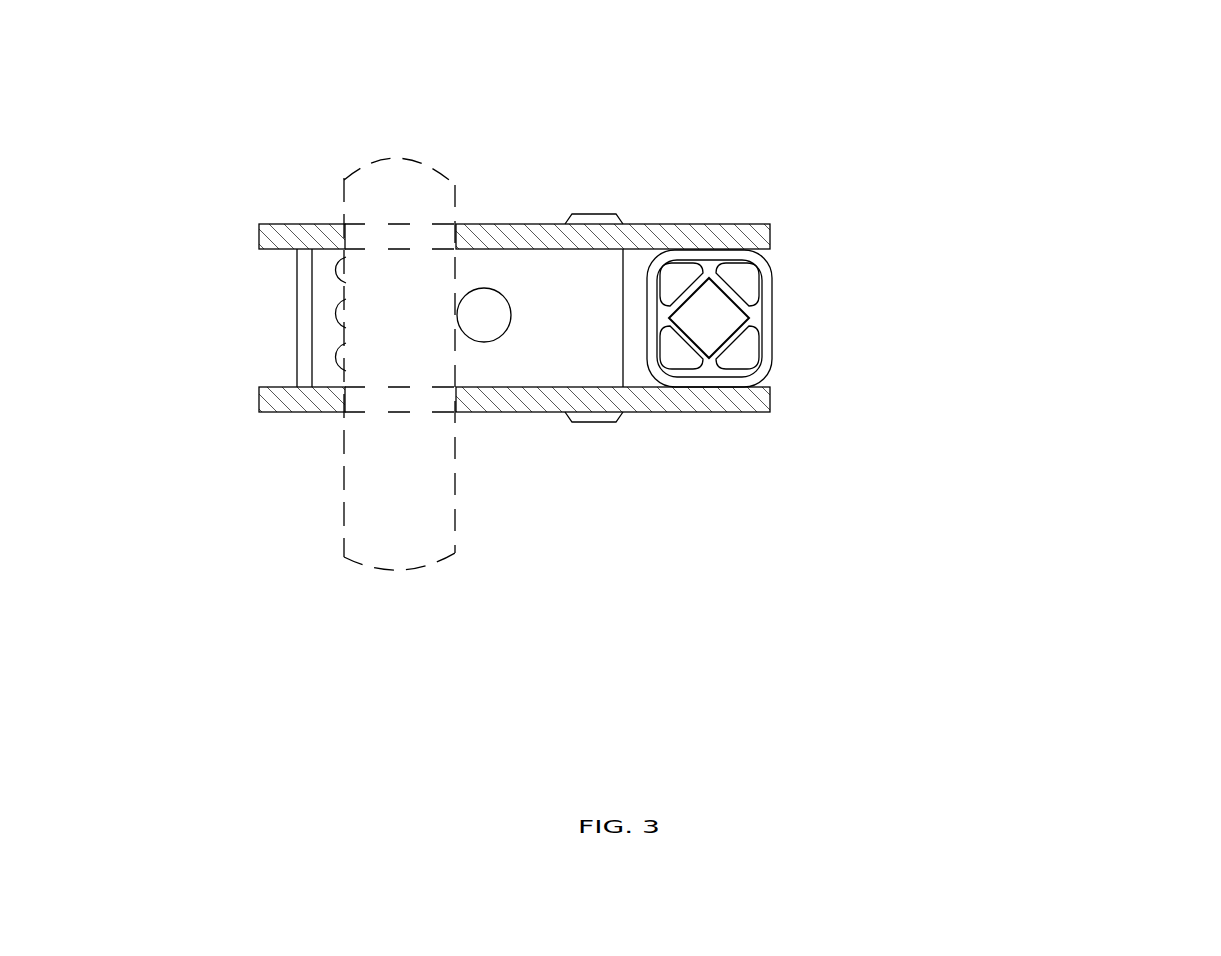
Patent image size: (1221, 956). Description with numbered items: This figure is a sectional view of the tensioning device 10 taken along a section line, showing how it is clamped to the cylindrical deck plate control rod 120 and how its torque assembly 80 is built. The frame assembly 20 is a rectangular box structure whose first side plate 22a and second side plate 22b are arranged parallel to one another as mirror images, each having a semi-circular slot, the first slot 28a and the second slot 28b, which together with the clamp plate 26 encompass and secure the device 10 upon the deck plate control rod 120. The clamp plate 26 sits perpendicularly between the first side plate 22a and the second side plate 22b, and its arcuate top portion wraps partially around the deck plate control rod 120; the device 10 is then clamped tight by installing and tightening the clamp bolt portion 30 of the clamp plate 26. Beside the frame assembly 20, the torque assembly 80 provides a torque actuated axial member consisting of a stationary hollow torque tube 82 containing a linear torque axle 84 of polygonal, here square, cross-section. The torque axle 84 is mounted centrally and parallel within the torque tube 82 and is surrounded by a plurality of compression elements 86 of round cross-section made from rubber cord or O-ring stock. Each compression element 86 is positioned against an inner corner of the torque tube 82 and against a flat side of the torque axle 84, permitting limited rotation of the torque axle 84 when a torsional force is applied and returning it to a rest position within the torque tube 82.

The tensioning device 10 is at (1060, 156).
The frame assembly 20 is at (657, 224).
The first side plate 22a is at (263, 225).
The second side plate 22b is at (290, 412).
The clamp plate 26 is at (323, 313).
The first slot 28a is at (395, 224).
The second slot 28b is at (397, 412).
The clamp bolt portion 30 is at (495, 290).
The torque assembly 80 is at (770, 374).
The torque tube 82 is at (772, 333).
The torque axle 84 is at (717, 323).
The compression elements 86 is at (735, 283).
The deck plate control rod 120 is at (343, 545).